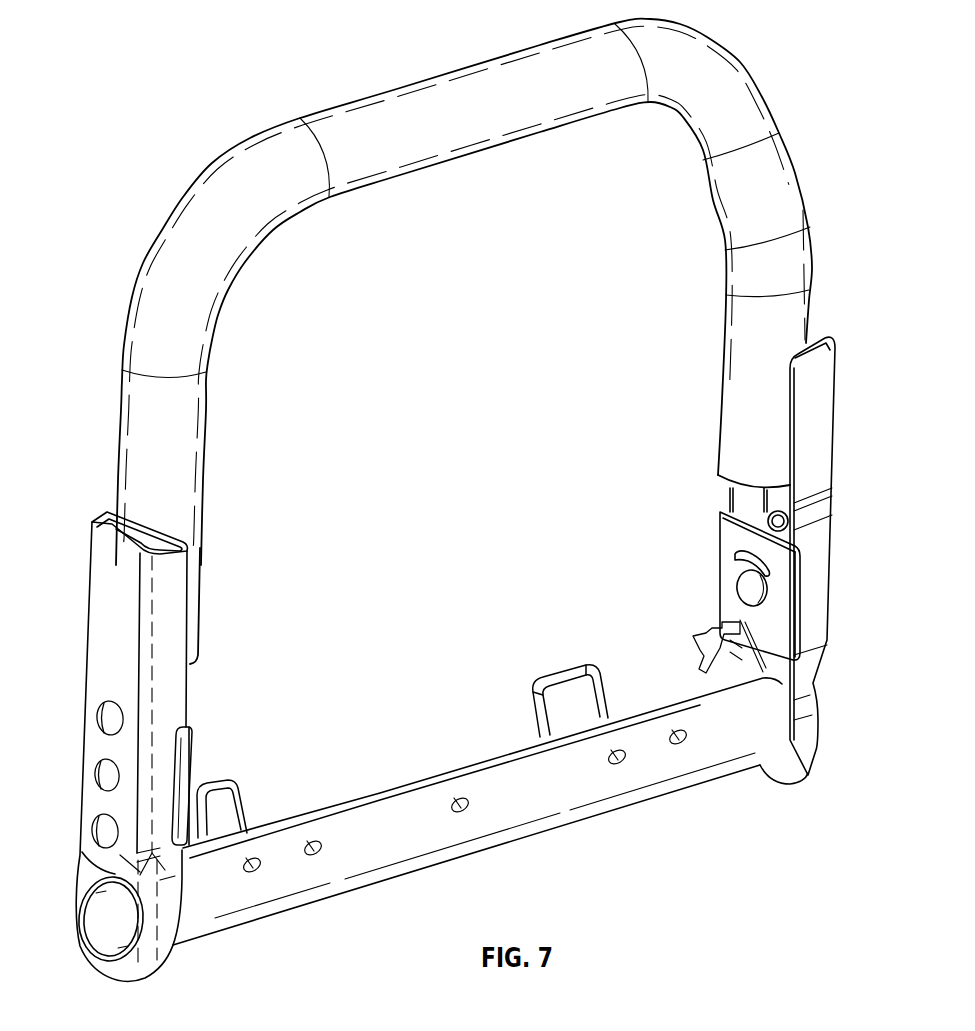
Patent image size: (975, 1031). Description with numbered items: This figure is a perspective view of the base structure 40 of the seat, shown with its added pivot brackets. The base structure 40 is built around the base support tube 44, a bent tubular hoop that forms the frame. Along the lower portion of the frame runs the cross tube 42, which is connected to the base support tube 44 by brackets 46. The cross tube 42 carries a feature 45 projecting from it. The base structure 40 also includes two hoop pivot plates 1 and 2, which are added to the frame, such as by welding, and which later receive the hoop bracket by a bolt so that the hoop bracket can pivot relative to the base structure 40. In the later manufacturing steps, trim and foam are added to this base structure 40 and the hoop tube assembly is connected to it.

The base structure 40 is at (464, 341).
The base support tube 44 is at (180, 452).
The brackets 46 is at (113, 632).
The hoop pivot plate 1 is at (194, 752).
The feature 45 is at (560, 667).
The hoop pivot plate 2 is at (738, 567).
The cross tube 42 is at (592, 795).